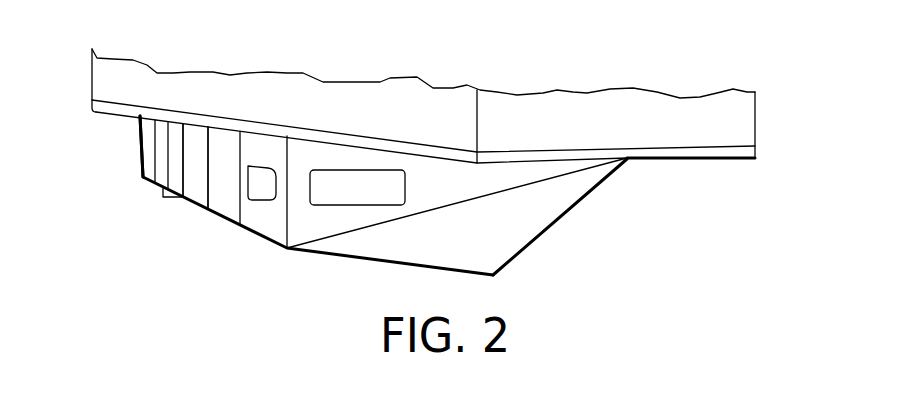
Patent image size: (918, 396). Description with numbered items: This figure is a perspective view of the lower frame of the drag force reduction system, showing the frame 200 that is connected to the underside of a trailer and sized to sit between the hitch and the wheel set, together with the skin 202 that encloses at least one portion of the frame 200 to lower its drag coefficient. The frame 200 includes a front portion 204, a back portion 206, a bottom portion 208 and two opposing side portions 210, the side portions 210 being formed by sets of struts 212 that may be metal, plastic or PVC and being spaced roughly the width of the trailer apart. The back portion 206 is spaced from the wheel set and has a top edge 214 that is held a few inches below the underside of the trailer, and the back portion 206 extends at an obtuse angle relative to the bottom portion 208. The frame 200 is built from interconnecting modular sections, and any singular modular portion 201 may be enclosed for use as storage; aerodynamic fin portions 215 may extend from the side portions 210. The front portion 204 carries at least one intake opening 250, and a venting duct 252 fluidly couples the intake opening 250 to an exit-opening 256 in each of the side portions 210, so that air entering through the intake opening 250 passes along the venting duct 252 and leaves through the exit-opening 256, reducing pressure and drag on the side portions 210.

The frame 200 is at (395, 63).
The modular portion 201 is at (175, 150).
The skin 202 is at (552, 248).
The front portion 204 is at (451, 186).
The back portion 206 is at (133, 140).
The bottom portion 208 is at (218, 213).
The side portions 210 is at (221, 144).
The struts 212 is at (241, 152).
The top edge 214 is at (138, 127).
The aerodynamic fin portions 215 is at (170, 199).
The intake opening 250 is at (372, 206).
The venting duct 252 is at (347, 190).
The exit-opening 256 is at (257, 200).